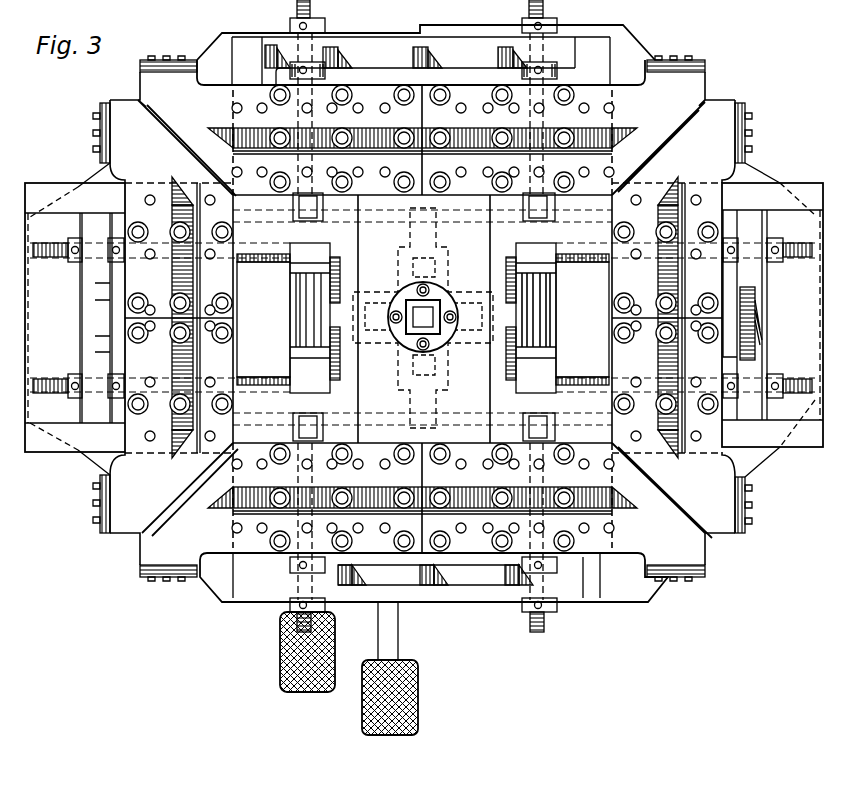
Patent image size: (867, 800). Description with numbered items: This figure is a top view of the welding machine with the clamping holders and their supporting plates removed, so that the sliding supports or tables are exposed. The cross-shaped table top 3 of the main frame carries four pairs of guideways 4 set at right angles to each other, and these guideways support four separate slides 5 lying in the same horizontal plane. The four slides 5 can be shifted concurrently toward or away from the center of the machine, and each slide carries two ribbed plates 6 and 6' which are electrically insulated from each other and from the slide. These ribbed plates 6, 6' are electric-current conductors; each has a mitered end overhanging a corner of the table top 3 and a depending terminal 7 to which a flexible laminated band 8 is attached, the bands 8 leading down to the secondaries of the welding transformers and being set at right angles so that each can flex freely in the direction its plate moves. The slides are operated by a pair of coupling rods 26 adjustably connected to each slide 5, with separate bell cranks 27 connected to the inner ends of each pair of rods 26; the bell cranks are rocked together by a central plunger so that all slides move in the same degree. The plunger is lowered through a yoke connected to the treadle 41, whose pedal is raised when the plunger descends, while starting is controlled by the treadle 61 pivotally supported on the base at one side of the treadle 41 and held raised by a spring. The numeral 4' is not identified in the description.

The table top 3 is at (803, 448).
The guideways 4 is at (510, 313).
The clamping block 4' is at (75, 317).
The slides 5 is at (568, 608).
The ribbed plate 6 is at (422, 319).
The ribbed plate 6' is at (425, 319).
The depending terminal 7 is at (140, 82).
The flexible laminated band 8 is at (165, 57).
The coupling rods 26 is at (312, 14).
The bell cranks 27 is at (284, 291).
The treadle 41 is at (398, 645).
The treadle 61 is at (280, 671).